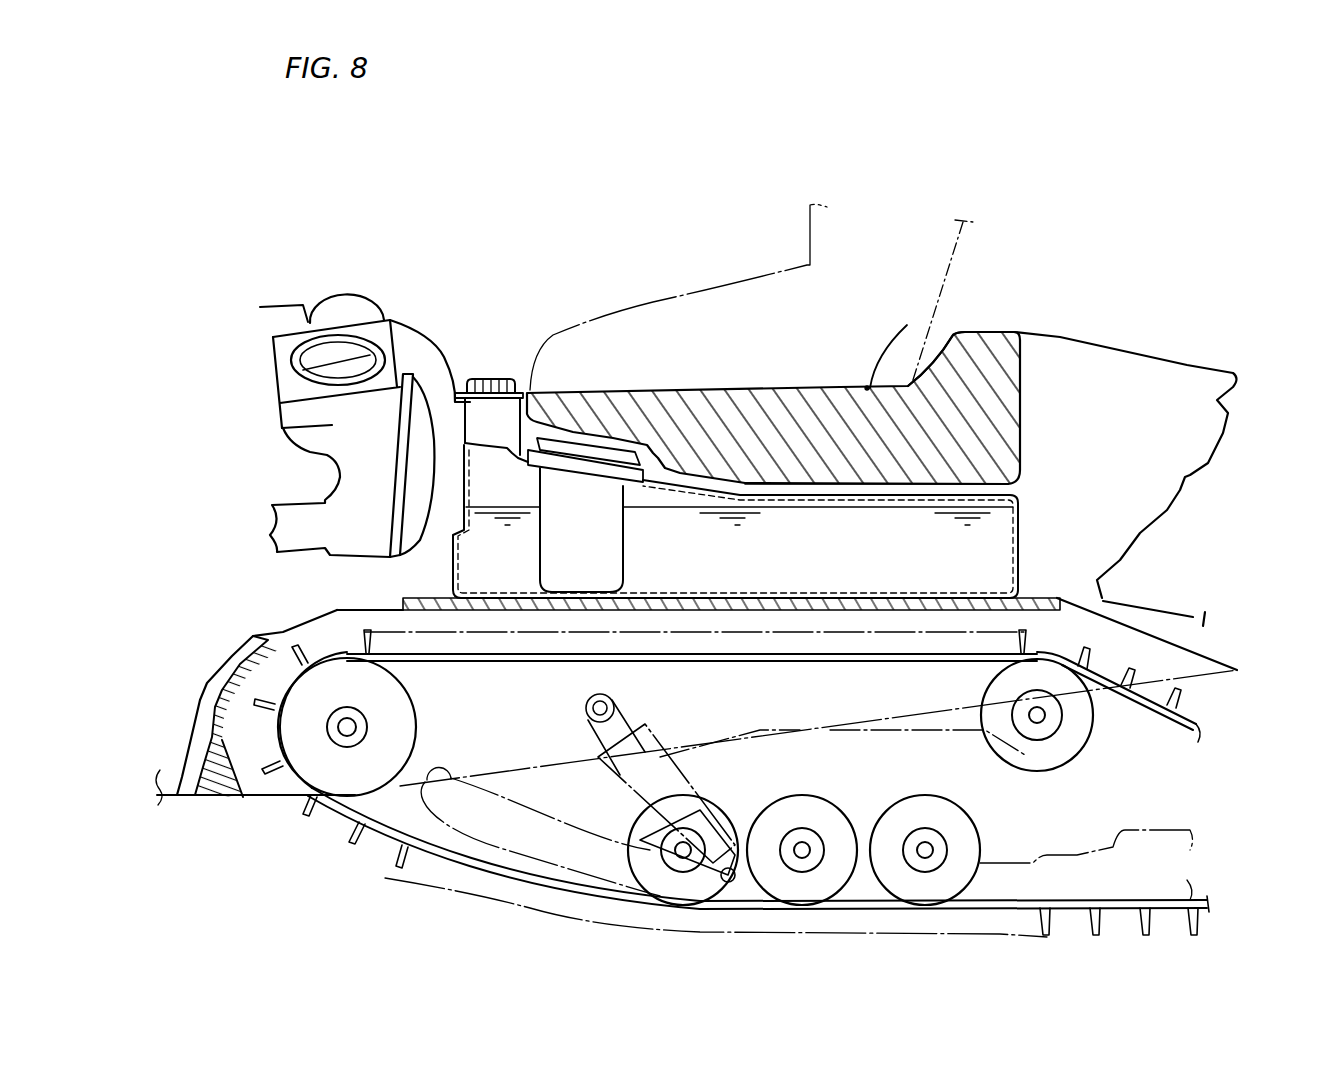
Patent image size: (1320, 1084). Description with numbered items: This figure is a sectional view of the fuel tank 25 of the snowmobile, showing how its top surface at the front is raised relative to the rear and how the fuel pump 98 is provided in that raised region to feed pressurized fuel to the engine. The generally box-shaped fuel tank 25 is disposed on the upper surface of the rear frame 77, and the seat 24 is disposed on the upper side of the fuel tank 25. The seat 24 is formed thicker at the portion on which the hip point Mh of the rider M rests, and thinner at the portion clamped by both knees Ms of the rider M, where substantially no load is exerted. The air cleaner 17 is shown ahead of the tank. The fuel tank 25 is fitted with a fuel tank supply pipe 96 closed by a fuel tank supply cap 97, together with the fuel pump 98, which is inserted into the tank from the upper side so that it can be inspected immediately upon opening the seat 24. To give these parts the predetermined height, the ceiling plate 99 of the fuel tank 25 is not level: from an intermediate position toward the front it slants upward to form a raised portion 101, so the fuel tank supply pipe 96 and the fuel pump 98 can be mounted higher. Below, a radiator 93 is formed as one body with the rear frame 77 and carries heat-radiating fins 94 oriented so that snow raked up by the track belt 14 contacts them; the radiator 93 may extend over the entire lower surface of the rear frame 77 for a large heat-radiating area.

The track belt 14 is at (380, 827).
The air cleaner 17 is at (332, 425).
The seat 24 is at (937, 423).
The fuel tank 25 is at (1028, 533).
The rear frame 77 is at (337, 610).
The radiator 93 is at (190, 795).
The heat-radiating fins 94 is at (222, 747).
The fuel tank supply pipe 96 is at (483, 422).
The fuel tank supply cap 97 is at (491, 378).
The fuel pump 98 is at (607, 453).
The ceiling plate 99 is at (790, 497).
The raised portion 101 is at (680, 460).
The rider M is at (963, 247).
The hip point Mh is at (907, 325).
The knees Ms is at (587, 355).